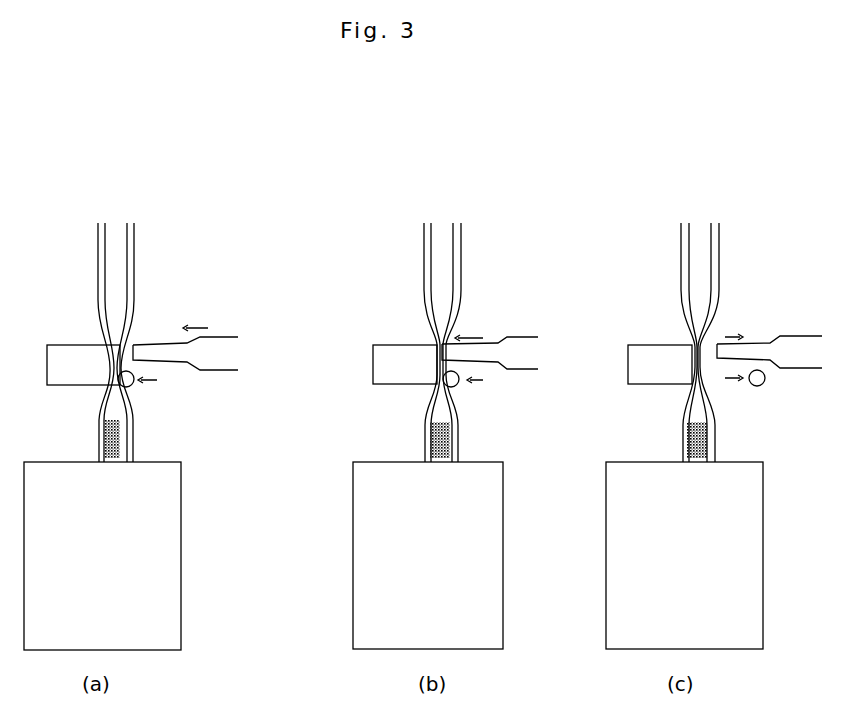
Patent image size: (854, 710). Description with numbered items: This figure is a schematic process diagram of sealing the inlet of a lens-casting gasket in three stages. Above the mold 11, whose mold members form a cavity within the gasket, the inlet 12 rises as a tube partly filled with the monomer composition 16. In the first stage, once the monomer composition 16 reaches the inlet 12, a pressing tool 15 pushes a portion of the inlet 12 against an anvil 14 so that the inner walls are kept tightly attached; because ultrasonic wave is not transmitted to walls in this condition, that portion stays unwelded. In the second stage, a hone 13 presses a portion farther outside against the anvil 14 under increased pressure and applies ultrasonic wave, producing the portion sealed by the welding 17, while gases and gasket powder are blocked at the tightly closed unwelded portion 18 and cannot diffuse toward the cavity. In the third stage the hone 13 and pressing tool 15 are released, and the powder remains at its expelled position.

The mold 11 is at (168, 510).
The inlet 12 is at (136, 249).
The hone 13 is at (185, 352).
The anvil 14 is at (95, 355).
The pressing tool 15 is at (133, 383).
The monomer composition 16 is at (127, 447).
The portion sealed by the welding 17 is at (437, 353).
The tightly closed unwelded portion 18 is at (437, 382).